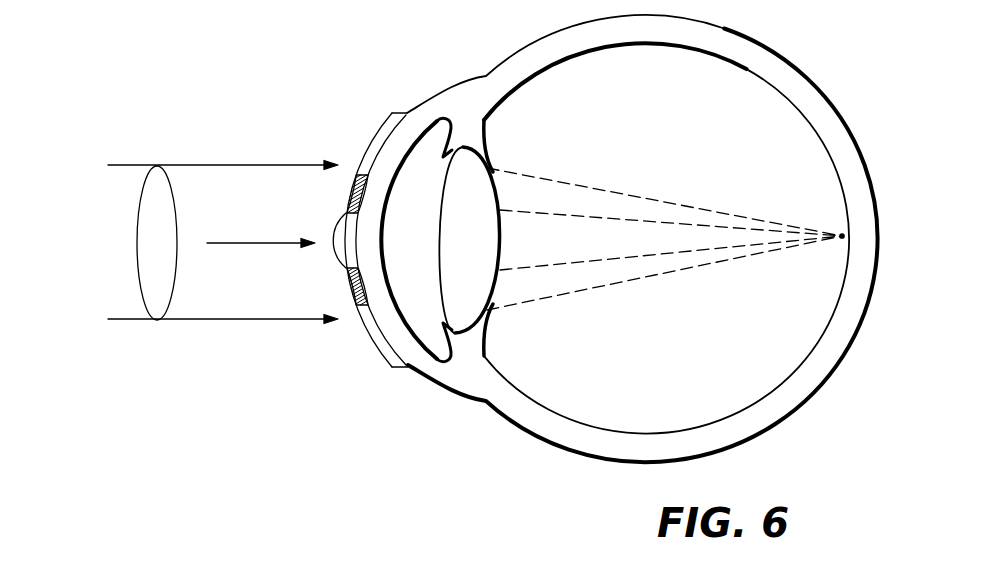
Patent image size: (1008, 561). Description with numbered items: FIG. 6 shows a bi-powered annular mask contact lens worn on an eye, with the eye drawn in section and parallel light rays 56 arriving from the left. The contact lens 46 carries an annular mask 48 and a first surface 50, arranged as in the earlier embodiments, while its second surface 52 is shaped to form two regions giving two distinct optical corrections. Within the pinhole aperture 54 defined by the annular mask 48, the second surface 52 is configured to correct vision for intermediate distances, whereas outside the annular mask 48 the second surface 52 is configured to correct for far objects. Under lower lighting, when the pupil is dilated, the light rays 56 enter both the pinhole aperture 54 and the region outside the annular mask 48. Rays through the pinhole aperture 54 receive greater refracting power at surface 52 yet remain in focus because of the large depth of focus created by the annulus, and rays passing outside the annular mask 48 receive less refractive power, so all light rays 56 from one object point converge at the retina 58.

The bi-powered contact lens 46 is at (392, 127).
The annular mask 48 is at (352, 294).
The first surface 50 is at (415, 328).
The second surface 52 is at (360, 347).
The pinhole aperture 54 is at (310, 261).
The light rays 56 is at (116, 207).
The retina 58 is at (859, 232).